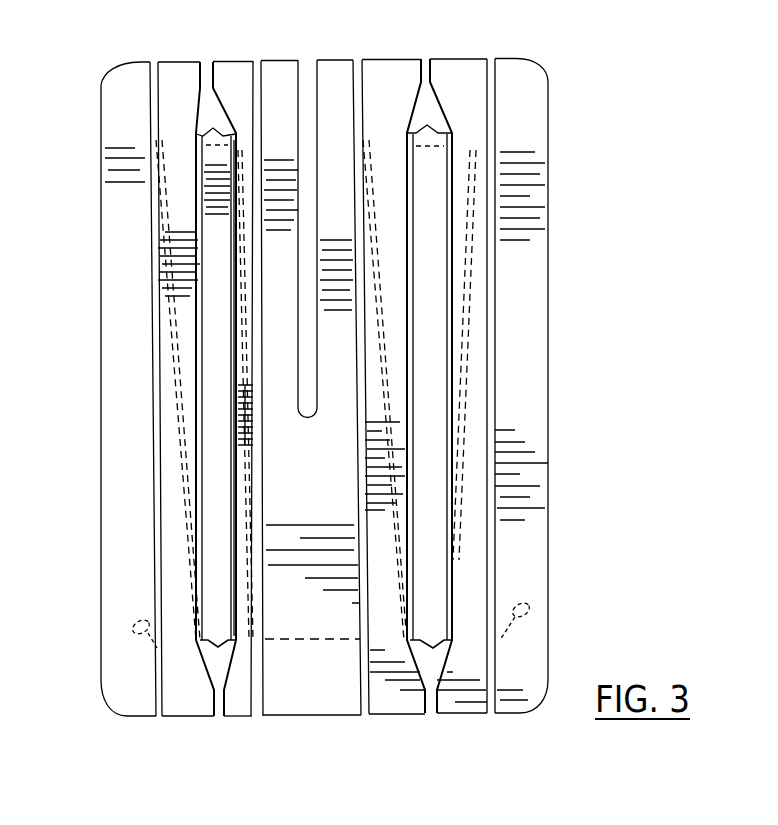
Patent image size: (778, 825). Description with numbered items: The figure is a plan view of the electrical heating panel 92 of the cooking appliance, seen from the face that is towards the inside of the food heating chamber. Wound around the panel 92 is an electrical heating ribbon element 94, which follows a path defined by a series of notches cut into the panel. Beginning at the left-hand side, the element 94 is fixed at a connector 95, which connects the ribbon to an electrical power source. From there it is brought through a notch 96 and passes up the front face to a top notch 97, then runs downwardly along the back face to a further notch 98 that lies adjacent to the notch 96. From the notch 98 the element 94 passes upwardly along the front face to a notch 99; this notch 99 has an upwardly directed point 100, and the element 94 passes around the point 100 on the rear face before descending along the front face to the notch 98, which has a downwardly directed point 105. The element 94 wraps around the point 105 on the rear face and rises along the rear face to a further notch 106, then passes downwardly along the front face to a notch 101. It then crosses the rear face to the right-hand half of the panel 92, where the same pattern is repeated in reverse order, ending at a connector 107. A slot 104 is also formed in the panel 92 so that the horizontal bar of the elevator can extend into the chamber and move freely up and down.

The electrical heating panel 92 is at (102, 88).
The electrical heating ribbon element 94 is at (150, 466).
The connector 95 is at (132, 624).
The notch 96 is at (157, 690).
The top notch 97 is at (158, 88).
The notch 98 is at (212, 673).
The notch 99 is at (200, 88).
The upwardly directed point 100 is at (222, 125).
The notch 101 is at (268, 692).
The slot 104 is at (298, 93).
The downwardly directed point 105 is at (223, 648).
The notch 106 is at (262, 82).
The connector 107 is at (530, 617).